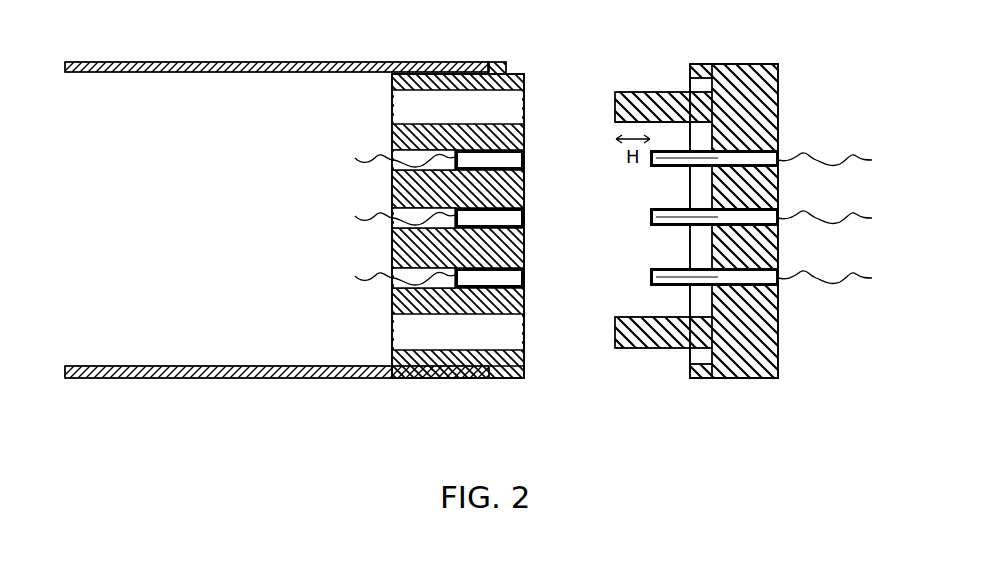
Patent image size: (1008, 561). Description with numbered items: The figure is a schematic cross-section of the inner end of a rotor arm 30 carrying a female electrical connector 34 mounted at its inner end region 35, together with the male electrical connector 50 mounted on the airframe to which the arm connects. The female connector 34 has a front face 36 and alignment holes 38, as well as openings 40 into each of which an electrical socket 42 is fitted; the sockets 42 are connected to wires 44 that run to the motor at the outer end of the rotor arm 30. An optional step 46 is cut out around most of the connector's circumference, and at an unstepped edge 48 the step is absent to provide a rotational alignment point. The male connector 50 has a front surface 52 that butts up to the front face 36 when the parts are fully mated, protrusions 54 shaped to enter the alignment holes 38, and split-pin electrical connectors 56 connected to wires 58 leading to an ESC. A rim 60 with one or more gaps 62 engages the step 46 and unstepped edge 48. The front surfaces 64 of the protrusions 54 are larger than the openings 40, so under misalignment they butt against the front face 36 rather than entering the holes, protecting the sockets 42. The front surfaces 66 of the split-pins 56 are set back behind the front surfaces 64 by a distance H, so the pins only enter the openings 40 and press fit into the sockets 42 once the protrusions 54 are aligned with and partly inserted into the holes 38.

The rotor arm 30 is at (262, 63).
The female electrical connector 34 is at (502, 378).
The inner end region 35 is at (430, 62).
The front face 36 is at (523, 304).
The alignment holes 38 is at (525, 340).
The openings 40 is at (525, 156).
The electrical socket 42 is at (525, 152).
The wires 44 is at (372, 157).
The step 46 is at (504, 70).
The unstepped edge 48 is at (521, 378).
The male electrical connector 50 is at (760, 65).
The front surface 52 is at (712, 262).
The protrusions 54 is at (652, 350).
The split-pin electrical connectors 56 is at (675, 286).
The wires 58 is at (850, 275).
The rim 60 is at (697, 64).
The gaps 62 is at (700, 378).
The front surfaces of the protrusions 64 is at (617, 104).
The front surfaces of the split-pins 66 is at (650, 160).